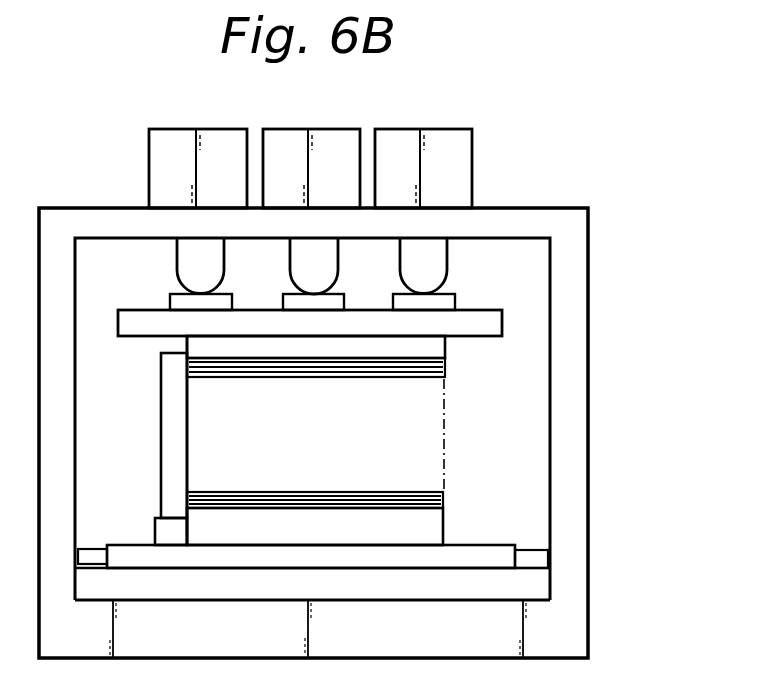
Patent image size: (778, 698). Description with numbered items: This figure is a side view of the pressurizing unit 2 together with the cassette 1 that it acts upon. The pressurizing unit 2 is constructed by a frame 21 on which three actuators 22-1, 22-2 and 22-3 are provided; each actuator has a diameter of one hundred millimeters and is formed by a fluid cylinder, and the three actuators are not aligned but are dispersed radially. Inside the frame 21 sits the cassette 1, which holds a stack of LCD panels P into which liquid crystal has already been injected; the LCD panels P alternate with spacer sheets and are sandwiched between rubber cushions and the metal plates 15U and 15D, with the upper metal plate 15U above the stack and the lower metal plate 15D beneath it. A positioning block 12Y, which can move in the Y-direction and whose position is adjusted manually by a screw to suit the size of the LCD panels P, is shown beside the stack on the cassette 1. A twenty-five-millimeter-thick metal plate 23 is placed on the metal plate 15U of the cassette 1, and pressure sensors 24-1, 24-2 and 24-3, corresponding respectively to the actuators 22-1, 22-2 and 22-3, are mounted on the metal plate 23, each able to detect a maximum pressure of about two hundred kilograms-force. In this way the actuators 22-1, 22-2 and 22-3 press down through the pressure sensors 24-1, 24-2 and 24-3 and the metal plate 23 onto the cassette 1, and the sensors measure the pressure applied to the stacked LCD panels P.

The pressurizing unit 2 is at (528, 132).
The frame 21 is at (575, 287).
The actuator 22-1 is at (338, 106).
The actuator 22-2 is at (226, 106).
The actuator 22-3 is at (450, 106).
The metal plate 23 is at (150, 308).
The pressure sensor 24-1 is at (378, 282).
The pressure sensor 24-2 is at (266, 282).
The pressure sensor 24-3 is at (498, 291).
The cassette 1 is at (154, 386).
The positioning block 12Y is at (170, 462).
The metal plate 15U is at (418, 347).
The metal plate 15D is at (418, 526).
The LCD panel P is at (445, 368).